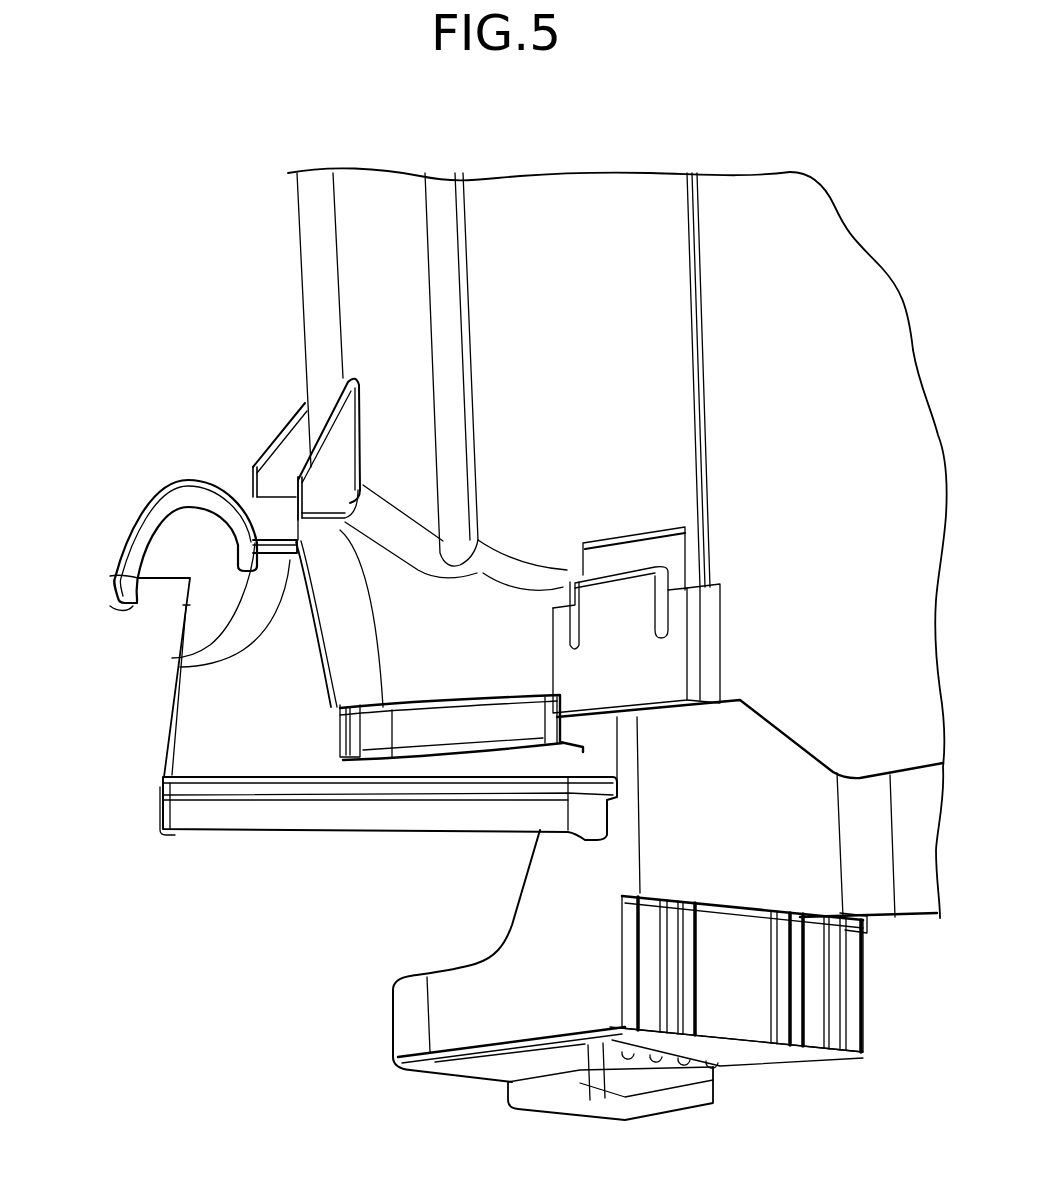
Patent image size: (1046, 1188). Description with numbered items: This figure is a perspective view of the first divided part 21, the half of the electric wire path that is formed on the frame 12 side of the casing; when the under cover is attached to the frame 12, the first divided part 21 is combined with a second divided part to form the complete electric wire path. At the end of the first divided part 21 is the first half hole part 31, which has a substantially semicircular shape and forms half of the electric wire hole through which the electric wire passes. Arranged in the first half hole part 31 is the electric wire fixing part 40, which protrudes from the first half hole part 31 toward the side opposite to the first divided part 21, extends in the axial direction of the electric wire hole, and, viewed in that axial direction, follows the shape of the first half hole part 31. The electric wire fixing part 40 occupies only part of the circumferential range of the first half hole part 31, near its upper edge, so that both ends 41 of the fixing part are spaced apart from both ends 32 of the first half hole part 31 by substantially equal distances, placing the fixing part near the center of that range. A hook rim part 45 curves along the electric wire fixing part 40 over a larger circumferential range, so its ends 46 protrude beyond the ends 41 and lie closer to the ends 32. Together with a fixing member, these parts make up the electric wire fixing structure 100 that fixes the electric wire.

The frame 12 is at (567, 197).
The first divided part 21 is at (333, 707).
The first half hole part 31 is at (170, 673).
The ends of the first half hole part 32 is at (333, 728).
The electric wire fixing part 40 is at (246, 504).
The ends of the electric wire fixing part 41 is at (130, 581).
The hook rim part 45 is at (172, 497).
The ends of the hook rim part 46 is at (172, 648).
The electric wire fixing structure 100 is at (223, 491).